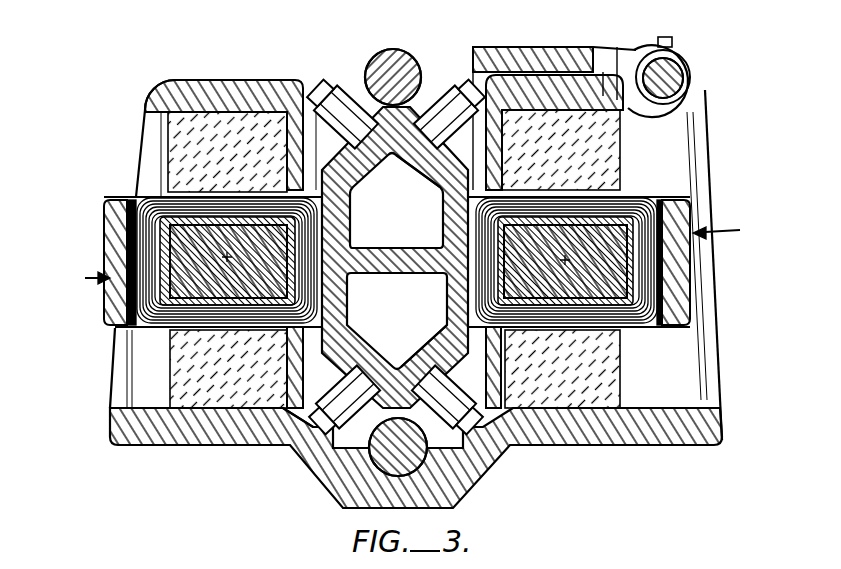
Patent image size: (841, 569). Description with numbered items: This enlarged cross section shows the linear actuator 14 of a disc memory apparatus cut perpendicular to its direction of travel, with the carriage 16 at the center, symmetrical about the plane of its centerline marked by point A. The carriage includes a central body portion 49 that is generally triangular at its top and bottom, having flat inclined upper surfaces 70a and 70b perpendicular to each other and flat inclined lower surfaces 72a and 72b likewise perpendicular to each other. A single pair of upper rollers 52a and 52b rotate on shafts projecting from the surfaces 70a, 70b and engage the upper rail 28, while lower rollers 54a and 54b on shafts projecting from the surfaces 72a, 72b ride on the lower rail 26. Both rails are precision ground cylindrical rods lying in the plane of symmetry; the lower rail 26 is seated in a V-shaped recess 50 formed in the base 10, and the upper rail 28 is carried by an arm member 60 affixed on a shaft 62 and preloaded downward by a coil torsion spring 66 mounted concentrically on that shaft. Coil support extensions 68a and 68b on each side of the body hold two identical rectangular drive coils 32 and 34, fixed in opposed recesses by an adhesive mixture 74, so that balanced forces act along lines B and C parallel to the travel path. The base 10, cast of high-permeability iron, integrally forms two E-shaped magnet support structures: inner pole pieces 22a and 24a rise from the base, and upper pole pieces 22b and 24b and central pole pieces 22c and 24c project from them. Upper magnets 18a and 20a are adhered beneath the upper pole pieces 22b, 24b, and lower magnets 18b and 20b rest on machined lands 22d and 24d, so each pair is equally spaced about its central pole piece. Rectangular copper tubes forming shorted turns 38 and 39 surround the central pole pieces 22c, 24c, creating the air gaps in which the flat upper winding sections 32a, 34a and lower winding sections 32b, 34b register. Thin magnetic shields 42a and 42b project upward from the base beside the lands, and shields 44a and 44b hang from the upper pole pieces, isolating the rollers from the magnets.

The base 10 is at (171, 447).
The linear actuator 14 is at (280, 19).
The carriage 16 is at (336, 82).
The upper magnet of first pair 18a is at (210, 143).
The lower magnet of first pair 18b is at (181, 370).
The upper magnet of second pair 20a is at (595, 146).
The lower magnet of second pair 20b is at (628, 408).
The inner pole piece 22a is at (121, 352).
The upper pole piece 22b is at (529, 62).
The central pole piece 22c is at (638, 232).
The land 22d is at (568, 408).
The inner pole piece 24a is at (713, 338).
The upper pole piece 24b is at (230, 80).
The central pole piece 24c is at (207, 257).
The land 24d is at (225, 413).
The lower rail 26 is at (457, 504).
The upper rail 28 is at (386, 50).
The drive coil 32 is at (140, 212).
The upper winding section 32a is at (218, 192).
The lower winding section 32b is at (217, 343).
The drive coil 34 is at (644, 282).
The upper winding section 34a is at (576, 177).
The lower winding section 34b is at (575, 330).
The shorted turn member 38 is at (168, 248).
The shorted turn member 39 is at (631, 293).
The magnetic shield 42a is at (170, 390).
The magnetic shield 42b is at (513, 446).
The magnetic shield 44a is at (298, 80).
The magnetic shield 44b is at (473, 58).
The central body portion 49 is at (295, 430).
The V-shaped recess 50 is at (385, 465).
The upper roller 52a is at (362, 97).
The upper roller 52b is at (440, 117).
The lower roller 54a is at (335, 437).
The lower roller 54b is at (454, 455).
The arm member 60 is at (585, 46).
The shaft 62 is at (666, 79).
The torsion spring 66 is at (676, 48).
The coil support extension 68a is at (79, 277).
The coil support extension 68b is at (733, 230).
The inclined upper surface 70a is at (354, 148).
The inclined upper surface 70b is at (462, 165).
The inclined lower surface 72a is at (323, 355).
The inclined lower surface 72b is at (443, 335).
The adhesive mixture 74 is at (112, 223).
The centerline point A is at (395, 262).
The line of force B is at (234, 262).
The line of force C is at (572, 262).